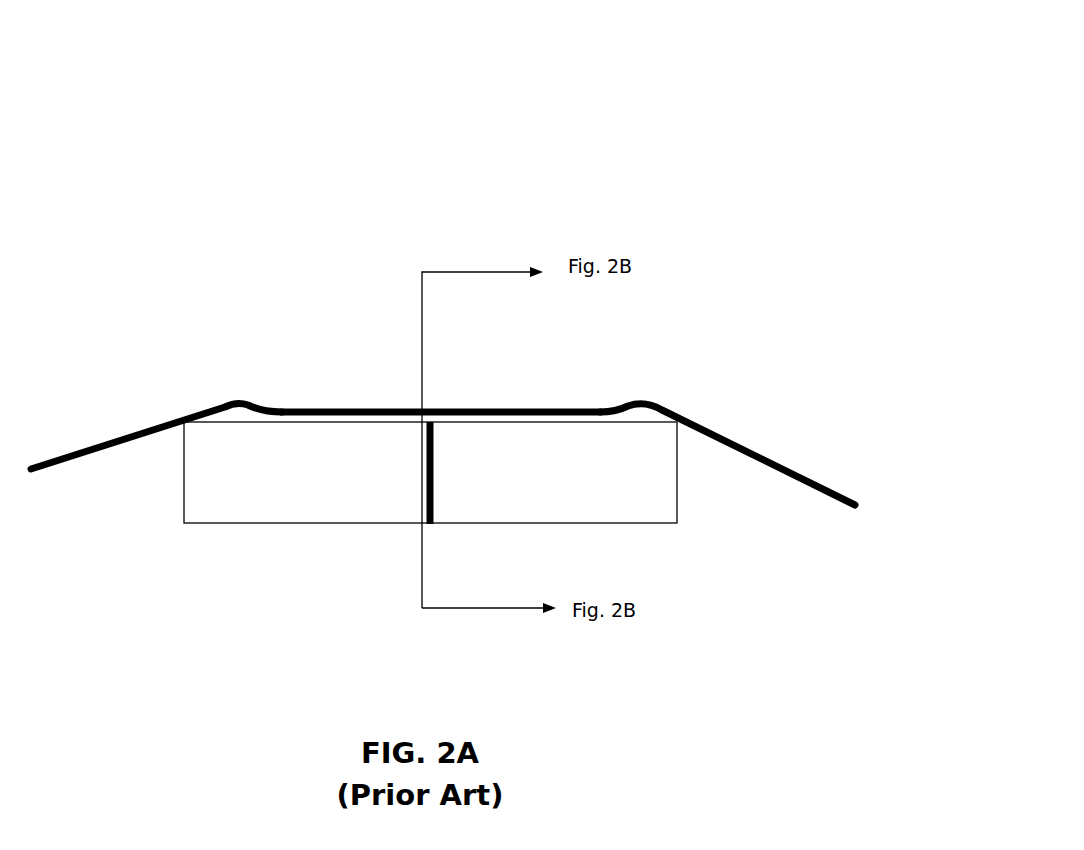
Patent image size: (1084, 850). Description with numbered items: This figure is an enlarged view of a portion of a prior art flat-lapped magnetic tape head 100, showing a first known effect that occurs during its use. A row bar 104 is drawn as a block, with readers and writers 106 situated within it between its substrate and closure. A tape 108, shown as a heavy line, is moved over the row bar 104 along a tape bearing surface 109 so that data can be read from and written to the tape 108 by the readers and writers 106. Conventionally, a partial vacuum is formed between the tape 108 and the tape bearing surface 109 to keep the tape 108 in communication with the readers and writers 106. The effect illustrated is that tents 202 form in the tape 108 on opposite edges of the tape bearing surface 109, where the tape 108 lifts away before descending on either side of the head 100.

The magnetic tape head 100 is at (720, 182).
The tents 202 is at (220, 378).
The tape bearing surface 109 is at (237, 424).
The tape 108 is at (800, 474).
The row bar 104 is at (250, 523).
The readers and writers 106 is at (433, 485).